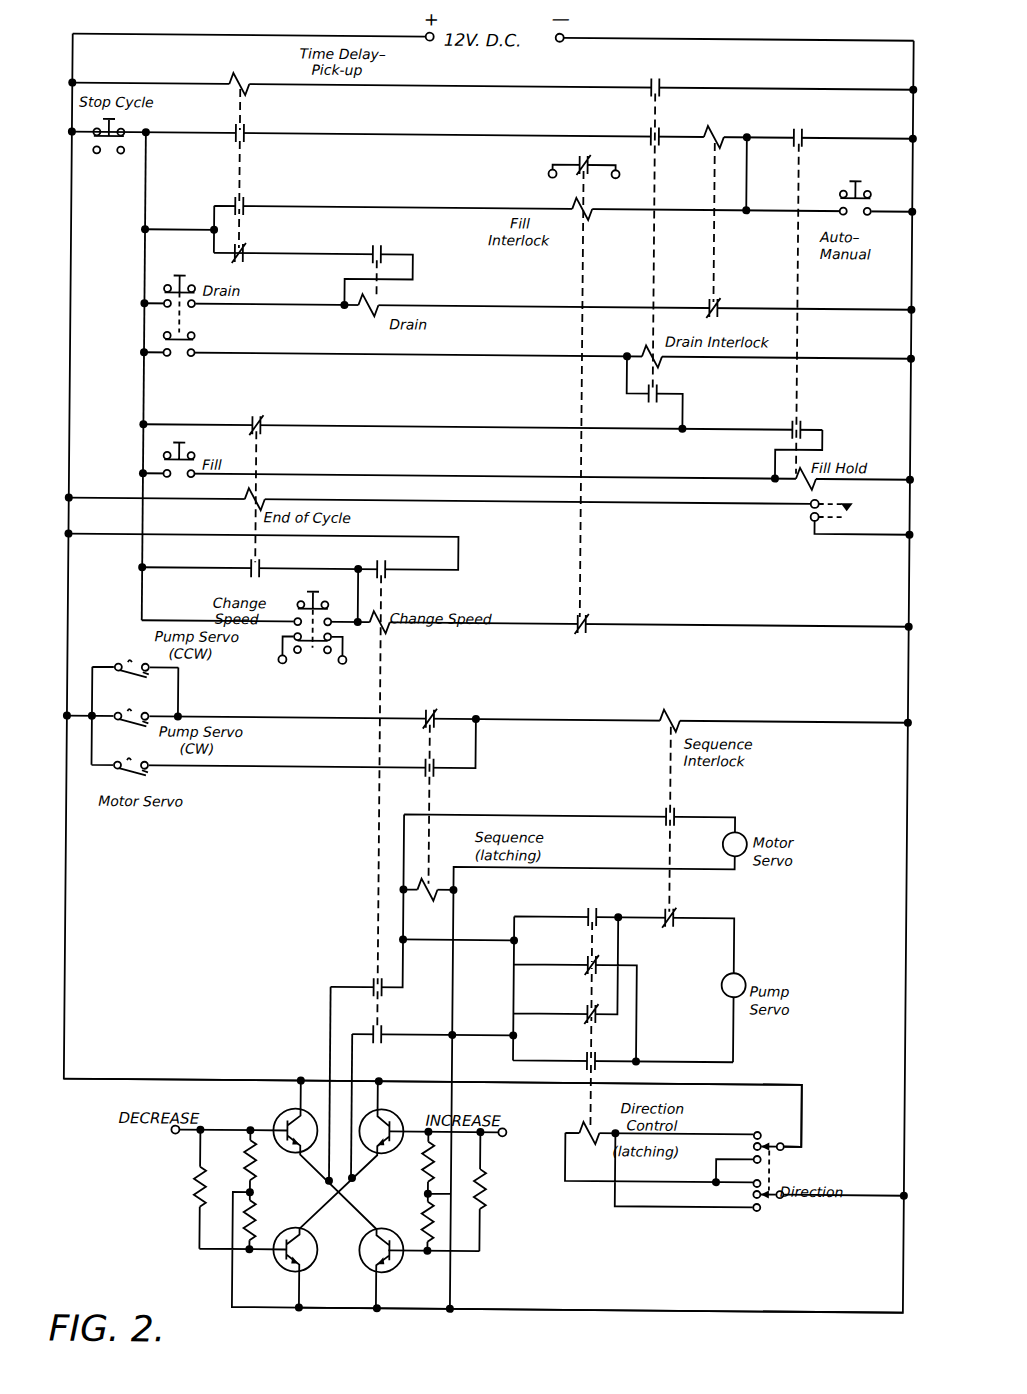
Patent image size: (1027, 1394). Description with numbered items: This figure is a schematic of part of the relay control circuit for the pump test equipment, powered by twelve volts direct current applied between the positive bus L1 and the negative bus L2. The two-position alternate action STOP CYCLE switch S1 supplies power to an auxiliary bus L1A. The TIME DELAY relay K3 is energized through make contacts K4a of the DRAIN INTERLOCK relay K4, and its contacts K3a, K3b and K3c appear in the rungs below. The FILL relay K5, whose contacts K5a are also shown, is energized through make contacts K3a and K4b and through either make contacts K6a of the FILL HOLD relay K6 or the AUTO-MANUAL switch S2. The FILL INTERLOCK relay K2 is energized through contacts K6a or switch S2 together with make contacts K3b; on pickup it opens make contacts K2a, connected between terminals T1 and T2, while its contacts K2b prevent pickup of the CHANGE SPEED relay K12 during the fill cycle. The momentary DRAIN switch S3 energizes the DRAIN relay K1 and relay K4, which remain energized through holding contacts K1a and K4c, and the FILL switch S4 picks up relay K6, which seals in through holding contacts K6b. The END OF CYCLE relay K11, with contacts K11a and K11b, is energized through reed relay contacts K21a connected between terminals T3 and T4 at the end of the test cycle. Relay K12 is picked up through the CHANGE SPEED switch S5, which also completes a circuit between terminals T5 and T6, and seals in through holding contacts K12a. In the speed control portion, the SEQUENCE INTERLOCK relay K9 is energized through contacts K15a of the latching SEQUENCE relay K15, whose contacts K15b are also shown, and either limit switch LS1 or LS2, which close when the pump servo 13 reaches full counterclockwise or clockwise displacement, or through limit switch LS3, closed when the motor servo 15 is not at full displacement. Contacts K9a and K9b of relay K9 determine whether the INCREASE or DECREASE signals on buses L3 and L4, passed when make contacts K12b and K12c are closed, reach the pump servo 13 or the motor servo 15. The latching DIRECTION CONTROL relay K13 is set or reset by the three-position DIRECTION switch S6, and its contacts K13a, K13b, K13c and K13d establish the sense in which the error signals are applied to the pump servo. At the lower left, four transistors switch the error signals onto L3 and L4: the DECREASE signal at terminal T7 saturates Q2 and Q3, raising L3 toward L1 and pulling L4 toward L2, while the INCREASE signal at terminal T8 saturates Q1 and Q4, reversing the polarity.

The positive bus L1 is at (76, 53).
The negative bus L2 is at (912, 58).
The auxiliary bus L1A is at (147, 217).
The bus L3 is at (337, 1050).
The bus L4 is at (350, 1062).
The STOP CYCLE switch S1 is at (116, 124).
The AUTO-MANUAL switch S2 is at (858, 184).
The DRAIN switch S3 is at (186, 268).
The FILL switch S4 is at (176, 444).
The CHANGE SPEED switch S5 is at (312, 617).
The DIRECTION switch S6 is at (814, 1174).
The DRAIN relay K1 is at (360, 296).
The holding contacts K1a is at (313, 268).
The FILL INTERLOCK relay K2 is at (588, 216).
The make contacts K2a is at (590, 152).
The contacts K2b is at (590, 610).
The TIME DELAY relay K3 is at (245, 76).
The make contacts K3a is at (261, 126).
The make contacts K3b is at (260, 198).
The time delay relay contact K3c is at (258, 247).
The DRAIN INTERLOCK relay K4 is at (638, 240).
The make contacts K4a is at (673, 82).
The make contacts K4b is at (632, 128).
The holding contacts K4c is at (660, 392).
The FILL relay K5 is at (733, 208).
The fill relay contact K5a is at (732, 303).
The FILL HOLD relay K6 is at (806, 482).
The make contacts K6a is at (814, 130).
The holding contacts K6b is at (807, 446).
The SEQUENCE INTERLOCK relay K9 is at (676, 704).
The contacts K9a is at (682, 804).
The contacts K9b is at (678, 905).
The END OF CYCLE relay K11 is at (271, 496).
The end of cycle relay contact K11a is at (279, 419).
The end of cycle relay contact K11b is at (276, 562).
The CHANGE SPEED relay K12 is at (393, 801).
The holding contacts K12a is at (263, 556).
The make contacts K12b is at (382, 982).
The make contacts K12c is at (397, 1029).
The DIRECTION CONTROL relay K13 is at (590, 1124).
The direction control relay contact K13a is at (594, 910).
The contacts K13b is at (594, 958).
The contacts K13c is at (594, 1007).
The direction control relay contact K13d is at (594, 1054).
The SEQUENCE relay K15 is at (430, 878).
The contacts K15a is at (428, 707).
The sequence latching relay contact K15b is at (440, 770).
The contacts K21a is at (857, 510).
The terminal T1 is at (538, 181).
The terminal T2 is at (620, 186).
The terminal T3 is at (825, 497).
The terminal T4 is at (842, 524).
The terminal T5 is at (276, 671).
The terminal T6 is at (336, 672).
The terminal T7 is at (167, 1139).
The terminal T8 is at (495, 1143).
The limit switch LS1 is at (135, 680).
The limit switch LS2 is at (127, 706).
The limit switch LS3 is at (126, 757).
The transistor Q1 is at (390, 1274).
The transistor Q2 is at (282, 1266).
The transistor Q3 is at (282, 1112).
The transistor Q4 is at (396, 1112).
The pump servo 13 is at (750, 977).
The motor servo 15 is at (750, 830).